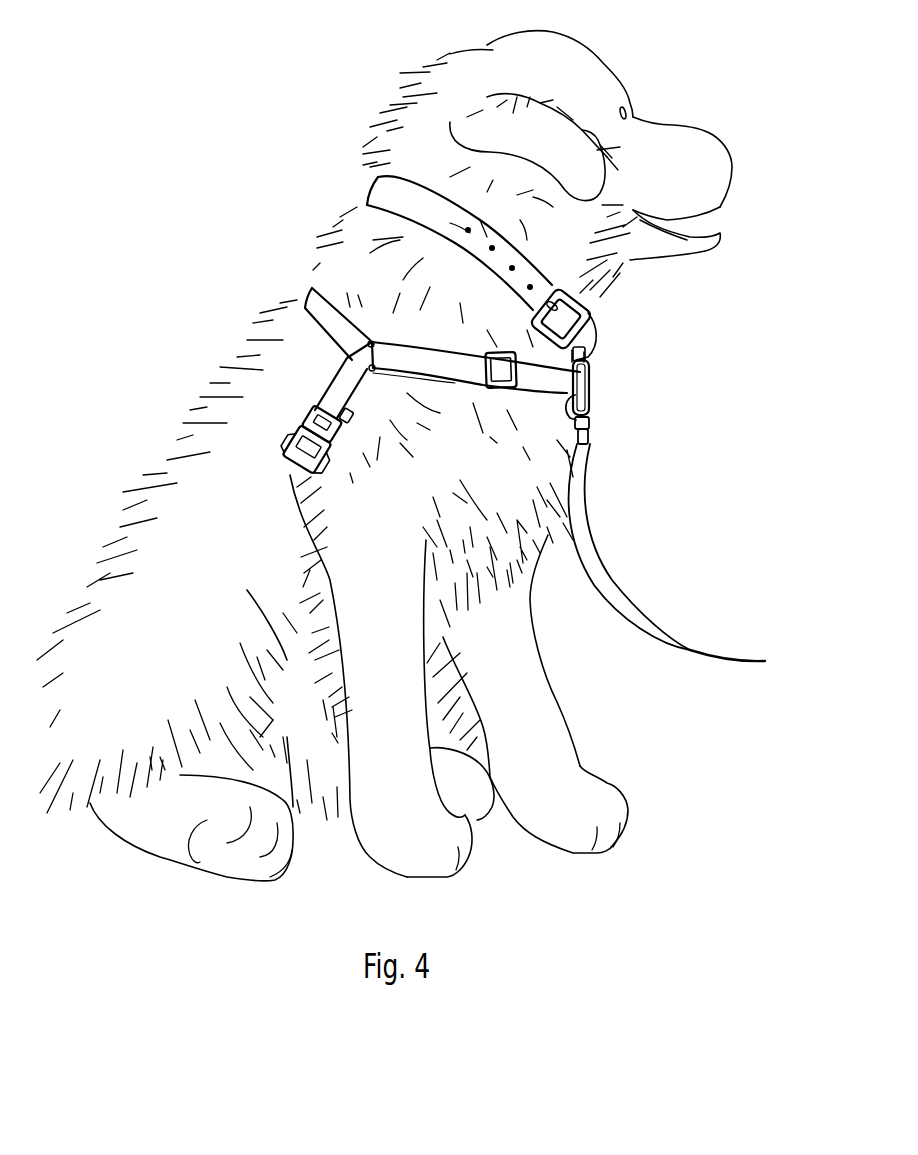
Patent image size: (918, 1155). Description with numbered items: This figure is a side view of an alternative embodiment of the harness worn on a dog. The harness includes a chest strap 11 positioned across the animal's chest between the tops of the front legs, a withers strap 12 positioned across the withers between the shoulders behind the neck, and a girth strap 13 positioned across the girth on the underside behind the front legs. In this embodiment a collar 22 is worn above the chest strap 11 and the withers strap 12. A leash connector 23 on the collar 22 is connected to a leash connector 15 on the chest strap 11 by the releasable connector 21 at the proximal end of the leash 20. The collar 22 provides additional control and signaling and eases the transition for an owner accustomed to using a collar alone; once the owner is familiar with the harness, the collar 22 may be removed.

The chest strap 11 is at (457, 380).
The withers strap 12 is at (330, 325).
The girth strap 13 is at (330, 390).
The leash connector 15 is at (580, 440).
The leash 20 is at (598, 567).
The releasable connector 21 is at (588, 393).
The collar 22 is at (423, 192).
The leash connector 23 is at (598, 342).